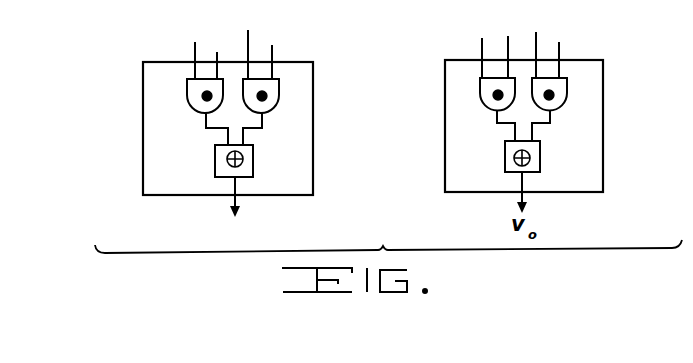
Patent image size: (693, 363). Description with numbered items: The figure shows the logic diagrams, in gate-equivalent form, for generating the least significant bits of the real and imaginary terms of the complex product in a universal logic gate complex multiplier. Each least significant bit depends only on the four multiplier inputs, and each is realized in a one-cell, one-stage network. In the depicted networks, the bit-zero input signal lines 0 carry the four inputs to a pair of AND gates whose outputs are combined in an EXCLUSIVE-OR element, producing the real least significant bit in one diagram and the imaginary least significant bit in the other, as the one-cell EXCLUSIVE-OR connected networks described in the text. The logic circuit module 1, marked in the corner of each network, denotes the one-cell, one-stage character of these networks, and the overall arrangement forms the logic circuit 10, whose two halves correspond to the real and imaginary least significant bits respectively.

In FIG. 10a, the logic circuit module of type 1 (two AND gates feeding an exclusive-OR) 1 is at (228, 128).
In FIG. 10b, the logic circuit module of type 1 (two AND gates feeding an exclusive-OR) 1 is at (524, 126).
In FIG. 10a, the bit-0 input signal lines (a0, b0, c0, d0) 0 is at (233, 41).
In FIG. 10b, the bit-0 input signal lines (a0, b0, c0, d0) 0 is at (523, 39).
In FIG. 10a, the FIG. 10 logic circuit 10 is at (388, 148).